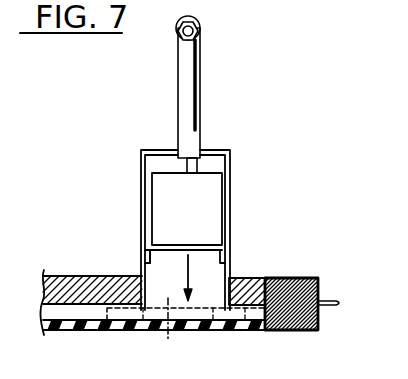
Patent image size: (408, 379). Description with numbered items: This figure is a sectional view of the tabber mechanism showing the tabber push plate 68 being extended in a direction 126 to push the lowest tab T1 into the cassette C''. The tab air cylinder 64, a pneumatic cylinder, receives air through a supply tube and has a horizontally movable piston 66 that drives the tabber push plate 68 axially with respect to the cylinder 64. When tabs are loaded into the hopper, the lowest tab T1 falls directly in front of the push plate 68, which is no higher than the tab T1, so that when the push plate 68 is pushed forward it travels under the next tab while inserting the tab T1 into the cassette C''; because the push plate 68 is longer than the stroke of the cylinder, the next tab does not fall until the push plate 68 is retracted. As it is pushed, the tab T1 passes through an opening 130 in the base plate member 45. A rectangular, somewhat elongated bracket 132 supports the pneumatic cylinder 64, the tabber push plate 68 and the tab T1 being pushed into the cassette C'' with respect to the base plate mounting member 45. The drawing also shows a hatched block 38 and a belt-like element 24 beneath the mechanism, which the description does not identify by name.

The tab air cylinder 64 is at (190, 92).
The piston 66 is at (193, 168).
The bracket 132 is at (219, 152).
The tabber push plate 68 is at (200, 219).
The lowest tab T1 is at (147, 253).
The opening 130 is at (191, 283).
The direction 126 is at (227, 286).
The side block 38 is at (281, 322).
The base plate member 45 is at (333, 272).
The conveyor belt 24 is at (200, 327).
The cassette C'' is at (150, 333).